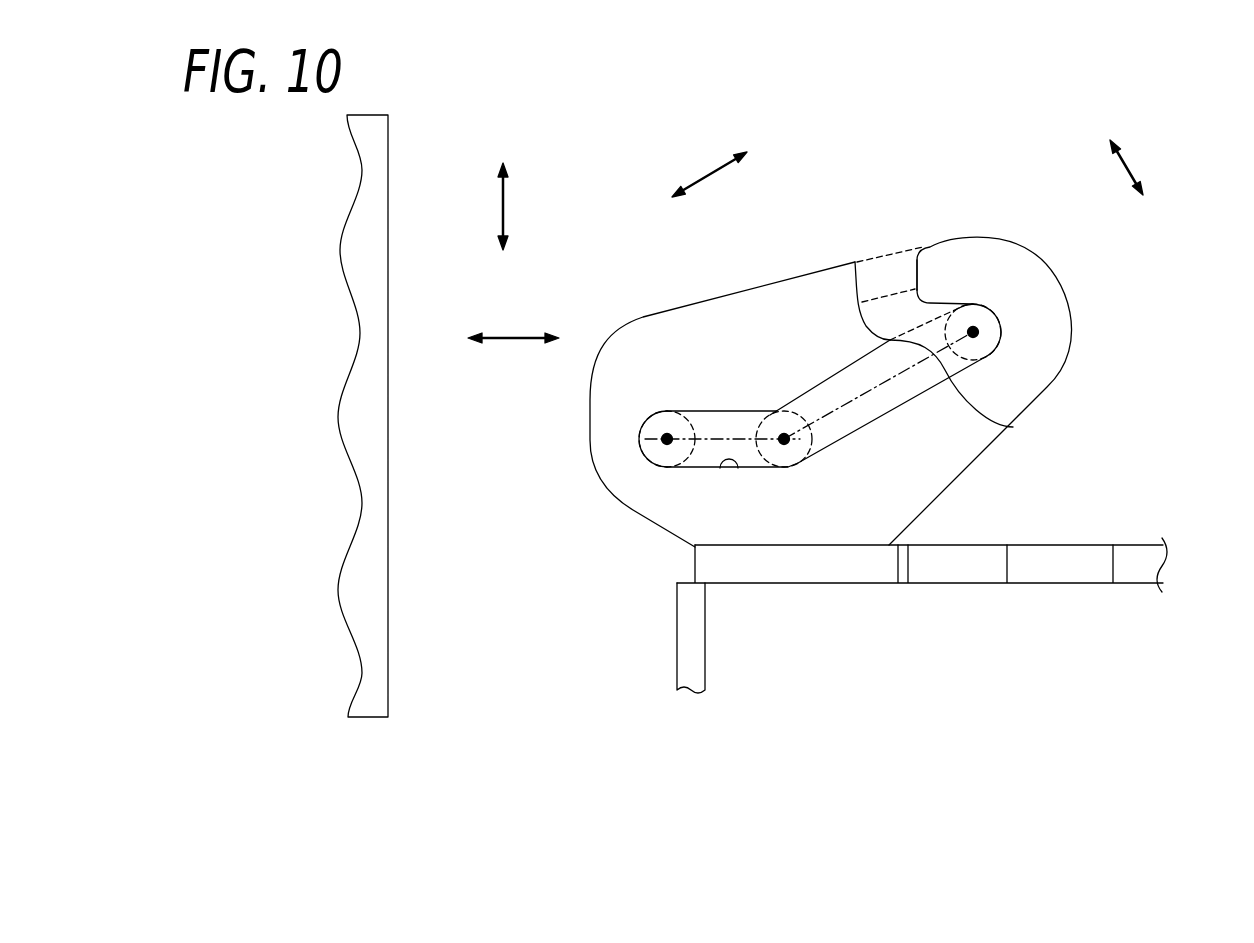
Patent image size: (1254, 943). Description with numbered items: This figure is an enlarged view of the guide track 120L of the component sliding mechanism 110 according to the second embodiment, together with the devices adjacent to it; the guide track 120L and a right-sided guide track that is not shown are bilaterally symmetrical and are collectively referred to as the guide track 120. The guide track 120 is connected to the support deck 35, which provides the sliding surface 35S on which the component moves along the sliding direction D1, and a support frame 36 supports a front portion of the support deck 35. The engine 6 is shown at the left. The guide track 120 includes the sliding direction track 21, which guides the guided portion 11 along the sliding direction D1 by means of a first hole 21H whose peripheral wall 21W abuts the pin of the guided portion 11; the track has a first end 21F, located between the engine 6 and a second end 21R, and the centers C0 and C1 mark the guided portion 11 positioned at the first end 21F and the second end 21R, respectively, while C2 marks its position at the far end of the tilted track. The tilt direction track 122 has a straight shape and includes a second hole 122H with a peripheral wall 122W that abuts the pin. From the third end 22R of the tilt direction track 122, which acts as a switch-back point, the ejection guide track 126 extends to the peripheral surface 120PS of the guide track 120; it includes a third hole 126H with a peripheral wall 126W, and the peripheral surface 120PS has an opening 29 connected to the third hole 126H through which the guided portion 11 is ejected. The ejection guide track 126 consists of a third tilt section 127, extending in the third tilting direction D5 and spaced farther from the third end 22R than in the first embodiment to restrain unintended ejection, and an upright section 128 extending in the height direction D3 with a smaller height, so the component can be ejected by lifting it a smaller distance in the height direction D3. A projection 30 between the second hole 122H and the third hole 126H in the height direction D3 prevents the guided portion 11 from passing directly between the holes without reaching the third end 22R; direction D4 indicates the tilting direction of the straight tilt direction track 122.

The engine 6 is at (373, 705).
The component sliding mechanism 110 is at (885, 577).
The guide track 120 is at (906, 325).
The guide track 120L is at (831, 325).
The peripheral surface 120PS is at (1003, 235).
The sliding direction track 21 is at (692, 420).
The first hole 21H is at (692, 420).
The first end 21F is at (646, 414).
The second end 21R is at (784, 437).
The peripheral wall 21W is at (721, 470).
The tilt direction track 122 is at (941, 364).
The second hole 122H is at (949, 393).
The peripheral wall 122W is at (853, 431).
The third end 22R is at (1000, 310).
The ejection guide track 126 is at (897, 222).
The third hole 126H is at (891, 239).
The peripheral wall 126W is at (940, 253).
The third tilt section 127 is at (913, 310).
The upright section 128 is at (893, 280).
The opening 29 is at (862, 262).
The projection 30 is at (1013, 427).
The support deck 35 is at (922, 556).
The sliding surface 35S is at (1150, 543).
The support frame 36 is at (690, 633).
The guided portion 11 is at (642, 443).
The center C0 is at (665, 441).
The center C1 is at (786, 442).
The center C2 is at (975, 332).
The sliding direction D1 is at (505, 338).
The height direction D3 is at (500, 208).
The direction D4 is at (703, 177).
The third tilting direction D5 is at (1127, 158).